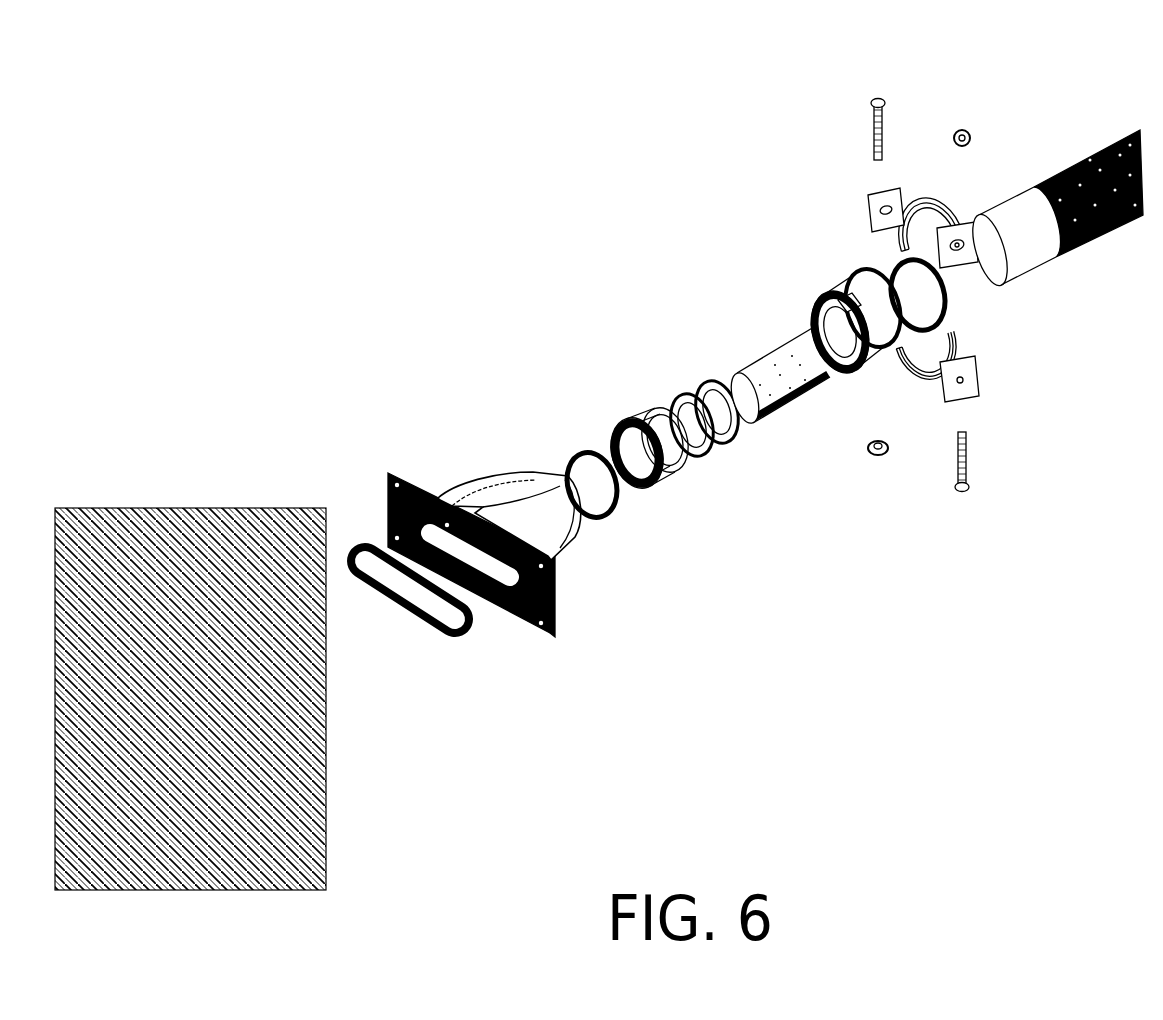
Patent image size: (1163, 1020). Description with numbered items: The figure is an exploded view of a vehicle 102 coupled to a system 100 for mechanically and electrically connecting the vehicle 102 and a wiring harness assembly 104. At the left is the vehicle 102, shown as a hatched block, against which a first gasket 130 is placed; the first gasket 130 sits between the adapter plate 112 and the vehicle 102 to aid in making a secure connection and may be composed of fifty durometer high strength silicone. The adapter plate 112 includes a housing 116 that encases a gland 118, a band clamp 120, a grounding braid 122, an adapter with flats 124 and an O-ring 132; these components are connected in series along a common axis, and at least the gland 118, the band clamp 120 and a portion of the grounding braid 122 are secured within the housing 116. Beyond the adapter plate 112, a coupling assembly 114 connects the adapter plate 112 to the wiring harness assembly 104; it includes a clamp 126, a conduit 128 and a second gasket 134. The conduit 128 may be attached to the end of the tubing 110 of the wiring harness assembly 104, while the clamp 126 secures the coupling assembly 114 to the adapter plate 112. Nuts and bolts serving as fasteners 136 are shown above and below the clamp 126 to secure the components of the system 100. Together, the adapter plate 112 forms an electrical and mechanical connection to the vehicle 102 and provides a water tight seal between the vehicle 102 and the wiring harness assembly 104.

The system 100 is at (512, 295).
The vehicle 102 is at (326, 823).
The wiring harness assembly 104 is at (1079, 198).
The tubing 110 is at (1077, 237).
The adapter plate 112 is at (392, 360).
The coupling assembly 114 is at (800, 175).
The housing 116 is at (395, 478).
The gland 118 is at (613, 430).
The band clamp 120 is at (690, 393).
The grounding braid 122 is at (767, 420).
The adapter with flats 124 is at (813, 312).
The clamp 126 is at (947, 375).
The conduit 128 is at (1022, 257).
The first gasket 130 is at (467, 637).
The O-ring 132 is at (563, 458).
The second gasket 134 is at (887, 273).
The fasteners 136 is at (919, 300).